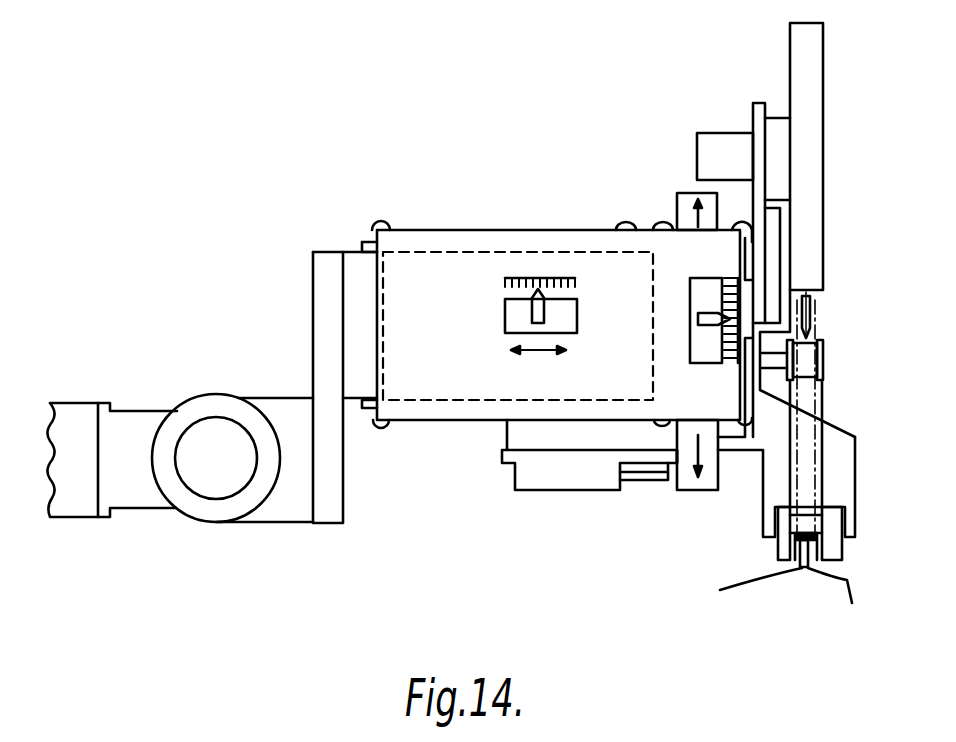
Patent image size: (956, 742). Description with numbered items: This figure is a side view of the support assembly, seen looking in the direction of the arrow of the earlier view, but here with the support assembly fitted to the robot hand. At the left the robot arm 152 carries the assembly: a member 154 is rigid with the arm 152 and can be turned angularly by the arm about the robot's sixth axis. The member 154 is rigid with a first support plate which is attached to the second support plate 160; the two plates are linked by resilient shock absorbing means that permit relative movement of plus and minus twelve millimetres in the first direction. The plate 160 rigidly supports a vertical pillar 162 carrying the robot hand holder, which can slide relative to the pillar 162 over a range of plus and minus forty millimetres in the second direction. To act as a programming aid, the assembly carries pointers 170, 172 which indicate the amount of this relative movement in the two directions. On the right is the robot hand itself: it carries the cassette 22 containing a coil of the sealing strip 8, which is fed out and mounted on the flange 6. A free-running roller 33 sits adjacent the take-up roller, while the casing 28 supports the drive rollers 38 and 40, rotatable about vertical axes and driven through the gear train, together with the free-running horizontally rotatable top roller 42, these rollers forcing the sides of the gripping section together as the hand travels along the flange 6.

The cassette 22 is at (797, 52).
The free-running roller 33 is at (823, 363).
The sealing strip 8 is at (808, 397).
The casing 28 is at (773, 478).
The drive roller 40 is at (785, 547).
The top roller 42 is at (810, 527).
The drive roller 38 is at (832, 552).
The flange 6 is at (800, 567).
The robot arm 152 is at (156, 510).
The member 154 is at (323, 313).
The second support plate 160 is at (435, 388).
The vertical pillar 162 is at (687, 488).
The pointer 170 is at (540, 310).
The pointer 172 is at (710, 312).